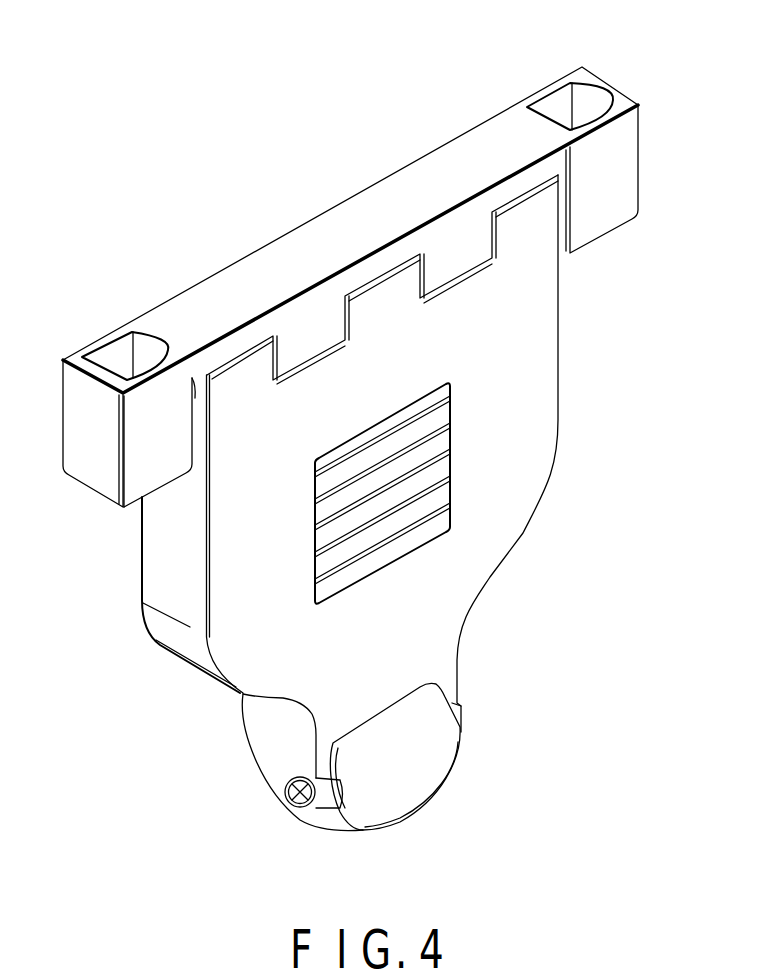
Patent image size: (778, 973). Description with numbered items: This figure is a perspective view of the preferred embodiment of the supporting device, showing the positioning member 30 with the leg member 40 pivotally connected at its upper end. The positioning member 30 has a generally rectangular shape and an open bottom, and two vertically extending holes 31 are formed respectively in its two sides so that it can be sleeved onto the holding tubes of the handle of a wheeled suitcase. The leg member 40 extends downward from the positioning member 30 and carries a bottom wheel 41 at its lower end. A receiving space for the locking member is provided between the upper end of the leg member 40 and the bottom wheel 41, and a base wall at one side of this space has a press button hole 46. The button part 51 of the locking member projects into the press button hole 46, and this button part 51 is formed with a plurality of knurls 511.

The positioning member 30 is at (617, 86).
The vertically extending holes 31 is at (117, 352).
The leg member 40 is at (558, 337).
The bottom wheel 41 is at (398, 805).
The press button hole 46 is at (452, 440).
The button part 51 is at (398, 470).
The knurls 511 is at (403, 533).